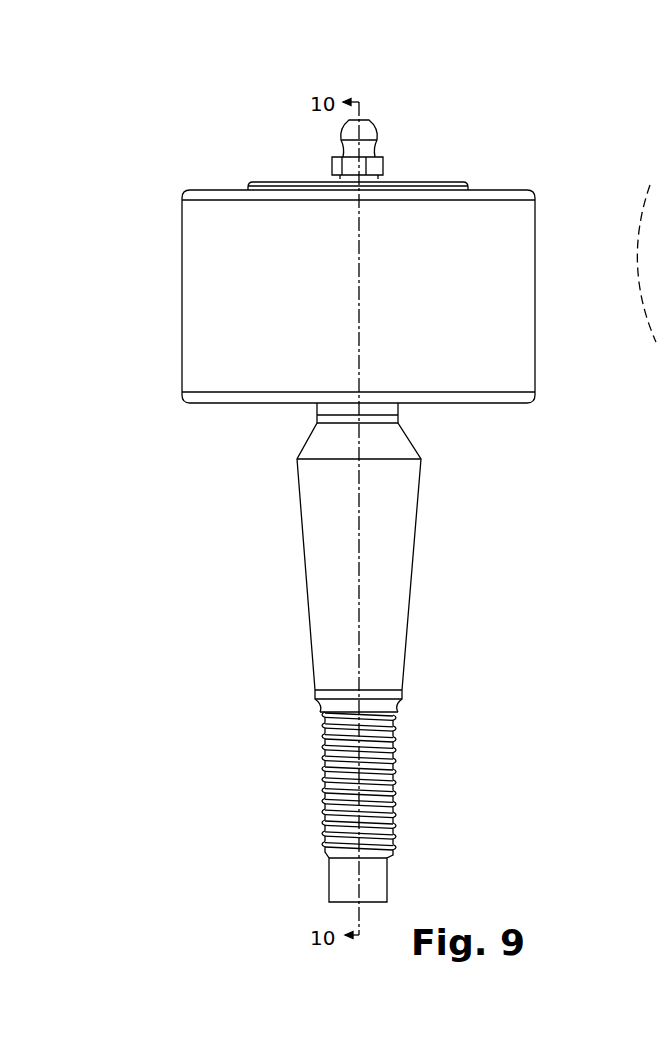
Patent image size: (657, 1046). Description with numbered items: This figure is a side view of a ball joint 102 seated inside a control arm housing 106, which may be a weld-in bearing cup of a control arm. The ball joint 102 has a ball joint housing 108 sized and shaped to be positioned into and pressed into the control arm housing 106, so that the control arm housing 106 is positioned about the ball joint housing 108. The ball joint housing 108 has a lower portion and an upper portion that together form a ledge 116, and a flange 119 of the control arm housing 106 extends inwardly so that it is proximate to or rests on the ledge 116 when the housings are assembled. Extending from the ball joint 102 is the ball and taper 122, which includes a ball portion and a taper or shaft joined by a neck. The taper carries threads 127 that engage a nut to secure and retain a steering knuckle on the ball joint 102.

The ball joint 102 is at (262, 137).
The control arm housing 106 is at (504, 232).
The ball joint housing 108 is at (423, 183).
The ledge 116 is at (656, 340).
The flange 119 is at (656, 228).
The ball and taper 122 is at (440, 538).
The threads 127 is at (383, 790).